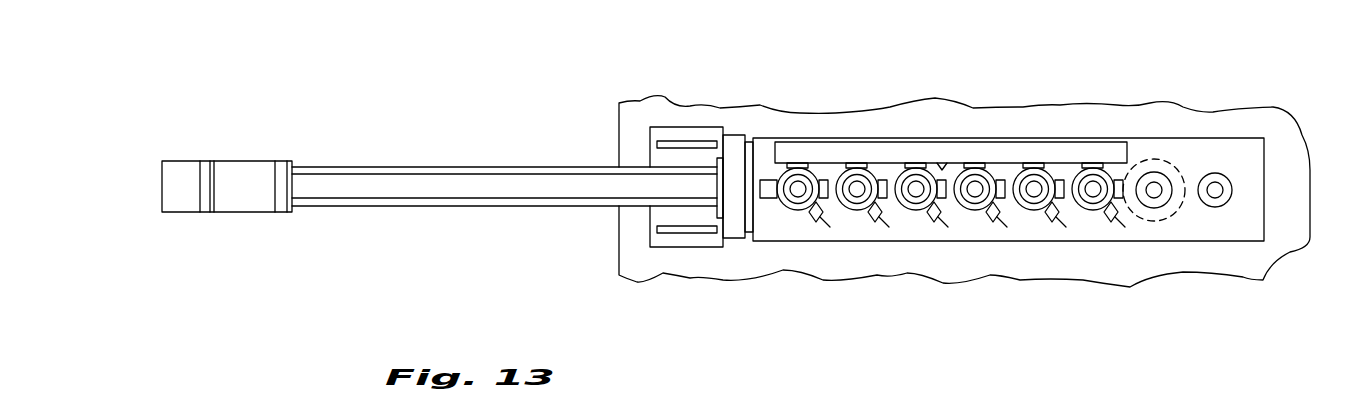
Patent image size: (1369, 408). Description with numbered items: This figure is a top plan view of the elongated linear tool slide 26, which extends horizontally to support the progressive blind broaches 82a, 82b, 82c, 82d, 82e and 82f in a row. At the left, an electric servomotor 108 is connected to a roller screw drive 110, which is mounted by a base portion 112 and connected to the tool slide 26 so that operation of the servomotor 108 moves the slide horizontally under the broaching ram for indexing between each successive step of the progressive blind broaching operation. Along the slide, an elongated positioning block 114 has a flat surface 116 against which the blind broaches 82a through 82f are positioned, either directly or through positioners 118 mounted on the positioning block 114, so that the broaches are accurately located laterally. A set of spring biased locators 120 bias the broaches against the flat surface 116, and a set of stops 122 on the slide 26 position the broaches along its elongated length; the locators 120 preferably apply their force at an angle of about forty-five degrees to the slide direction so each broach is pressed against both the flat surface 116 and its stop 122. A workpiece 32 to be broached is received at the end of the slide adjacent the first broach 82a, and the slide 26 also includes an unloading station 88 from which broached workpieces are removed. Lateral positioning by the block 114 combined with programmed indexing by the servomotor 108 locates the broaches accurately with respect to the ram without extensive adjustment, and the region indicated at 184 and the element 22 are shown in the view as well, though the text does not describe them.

The electric servomotor 108 is at (248, 168).
The roller screw drive 110 is at (467, 187).
The base portion 112 is at (735, 233).
The elongated positioning block 114 is at (951, 142).
The flat surface 116 is at (942, 163).
The positioners 118 is at (799, 163).
The stops 122 is at (765, 180).
The spring biased locators 120 is at (815, 222).
The progressive blind broach 82a is at (1085, 209).
The progressive blind broach 82b is at (1026, 209).
The progressive blind broach 82c is at (967, 209).
The progressive blind broach 82d is at (908, 209).
The progressive blind broach 82e is at (849, 209).
The progressive blind broach 82f is at (790, 209).
The drive hub 184 is at (1165, 202).
The unloading station 88 is at (1232, 190).
The elongated linear tool slide 26 is at (1188, 124).
The housing 22 is at (1232, 120).
The workpiece 32 is at (1176, 168).